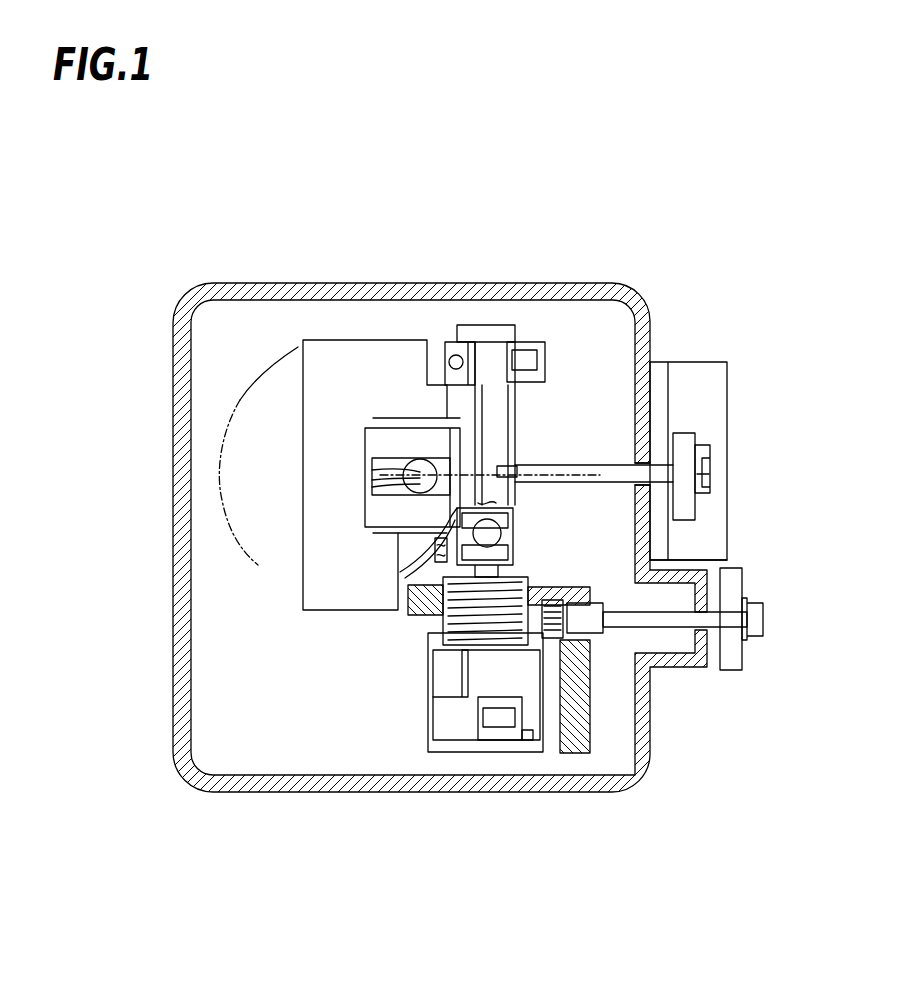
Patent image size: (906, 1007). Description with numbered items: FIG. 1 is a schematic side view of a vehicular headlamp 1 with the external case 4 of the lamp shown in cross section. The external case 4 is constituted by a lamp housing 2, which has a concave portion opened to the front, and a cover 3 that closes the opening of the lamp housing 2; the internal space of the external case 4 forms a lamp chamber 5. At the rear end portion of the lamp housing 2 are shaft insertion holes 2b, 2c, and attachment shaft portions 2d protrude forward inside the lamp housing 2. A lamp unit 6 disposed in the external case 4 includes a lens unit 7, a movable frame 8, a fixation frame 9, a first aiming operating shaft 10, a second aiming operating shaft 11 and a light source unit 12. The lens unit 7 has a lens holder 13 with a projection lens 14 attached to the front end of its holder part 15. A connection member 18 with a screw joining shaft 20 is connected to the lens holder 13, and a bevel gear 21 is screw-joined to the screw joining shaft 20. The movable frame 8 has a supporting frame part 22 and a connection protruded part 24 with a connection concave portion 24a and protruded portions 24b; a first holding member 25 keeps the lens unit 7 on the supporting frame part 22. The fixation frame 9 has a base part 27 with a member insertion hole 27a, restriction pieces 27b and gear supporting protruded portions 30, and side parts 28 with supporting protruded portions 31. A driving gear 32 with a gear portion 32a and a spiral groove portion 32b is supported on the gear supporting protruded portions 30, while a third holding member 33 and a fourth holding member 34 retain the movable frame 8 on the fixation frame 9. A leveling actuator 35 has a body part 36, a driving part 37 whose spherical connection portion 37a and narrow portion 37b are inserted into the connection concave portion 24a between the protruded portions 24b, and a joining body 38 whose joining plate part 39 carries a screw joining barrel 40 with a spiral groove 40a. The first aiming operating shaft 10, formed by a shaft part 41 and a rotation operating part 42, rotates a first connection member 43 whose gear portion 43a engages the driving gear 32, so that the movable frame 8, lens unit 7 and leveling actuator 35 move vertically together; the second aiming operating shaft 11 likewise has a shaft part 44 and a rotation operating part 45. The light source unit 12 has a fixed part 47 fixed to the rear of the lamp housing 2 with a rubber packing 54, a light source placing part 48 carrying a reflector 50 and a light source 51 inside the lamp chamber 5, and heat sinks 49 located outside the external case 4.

The vehicular headlamp 1 is at (118, 318).
The lamp housing 2 is at (313, 283).
The shaft insertion hole 2b is at (727, 668).
The shaft insertion hole 2c is at (690, 425).
The attachment shaft portions 2d is at (645, 715).
The cover 3 is at (275, 283).
The external case 4 is at (318, 250).
The lamp chamber 5 is at (232, 347).
The lamp unit 6 is at (365, 340).
The lens unit 7 is at (330, 340).
The movable frame 8 is at (347, 340).
The fixation frame 9 is at (482, 500).
The first aiming operating shaft 10 is at (740, 605).
The second aiming operating shaft 11 is at (690, 433).
The light source unit 12 is at (513, 515).
The lens holder 13 is at (357, 608).
The projection lens 14 is at (233, 508).
The holder part 15 is at (377, 608).
The connection member 18 is at (372, 480).
The screw joining shaft 20 is at (372, 488).
The gear 21 is at (372, 472).
The supporting frame part 22 is at (478, 345).
The connection protruded part 24 is at (513, 533).
The connection concave portion 24a is at (513, 548).
The protruded portions 24b is at (707, 578).
The first holding member 25 is at (385, 420).
The base part 27 is at (592, 755).
The member insertion hole 27a is at (600, 690).
The restriction pieces 27b is at (505, 700).
The side parts 28 is at (490, 500).
The gear supporting protruded portions 30 is at (428, 640).
The supporting protruded portions 31 is at (363, 440).
The driving gear 32 is at (408, 615).
The gear portion 32a is at (420, 615).
The spiral groove portion 32b is at (578, 745).
The third holding member 33 is at (447, 343).
The fourth holding member 34 is at (393, 615).
The leveling actuator 35 is at (562, 755).
The body part 36 is at (548, 640).
The driving part 37 is at (495, 383).
The spherical connection portion 37a is at (508, 378).
The narrow portion 37b is at (513, 560).
The joining body 38 is at (500, 740).
The joining plate part 39 is at (470, 700).
The screw joining barrel 40 is at (458, 655).
The spiral groove 40a is at (447, 627).
The shaft part 41 is at (704, 635).
The rotation operating part 42 is at (756, 620).
The first connection member 43 is at (640, 665).
The gear portion 43a is at (625, 788).
The shaft part 44 is at (650, 465).
The rotation operating part 45 is at (705, 462).
The fixed part 47 is at (661, 378).
The light source placing part 48 is at (668, 420).
The heat sinks 49 is at (695, 365).
The reflector 50 is at (608, 463).
The light source 51 is at (563, 465).
The packing 54 is at (710, 495).